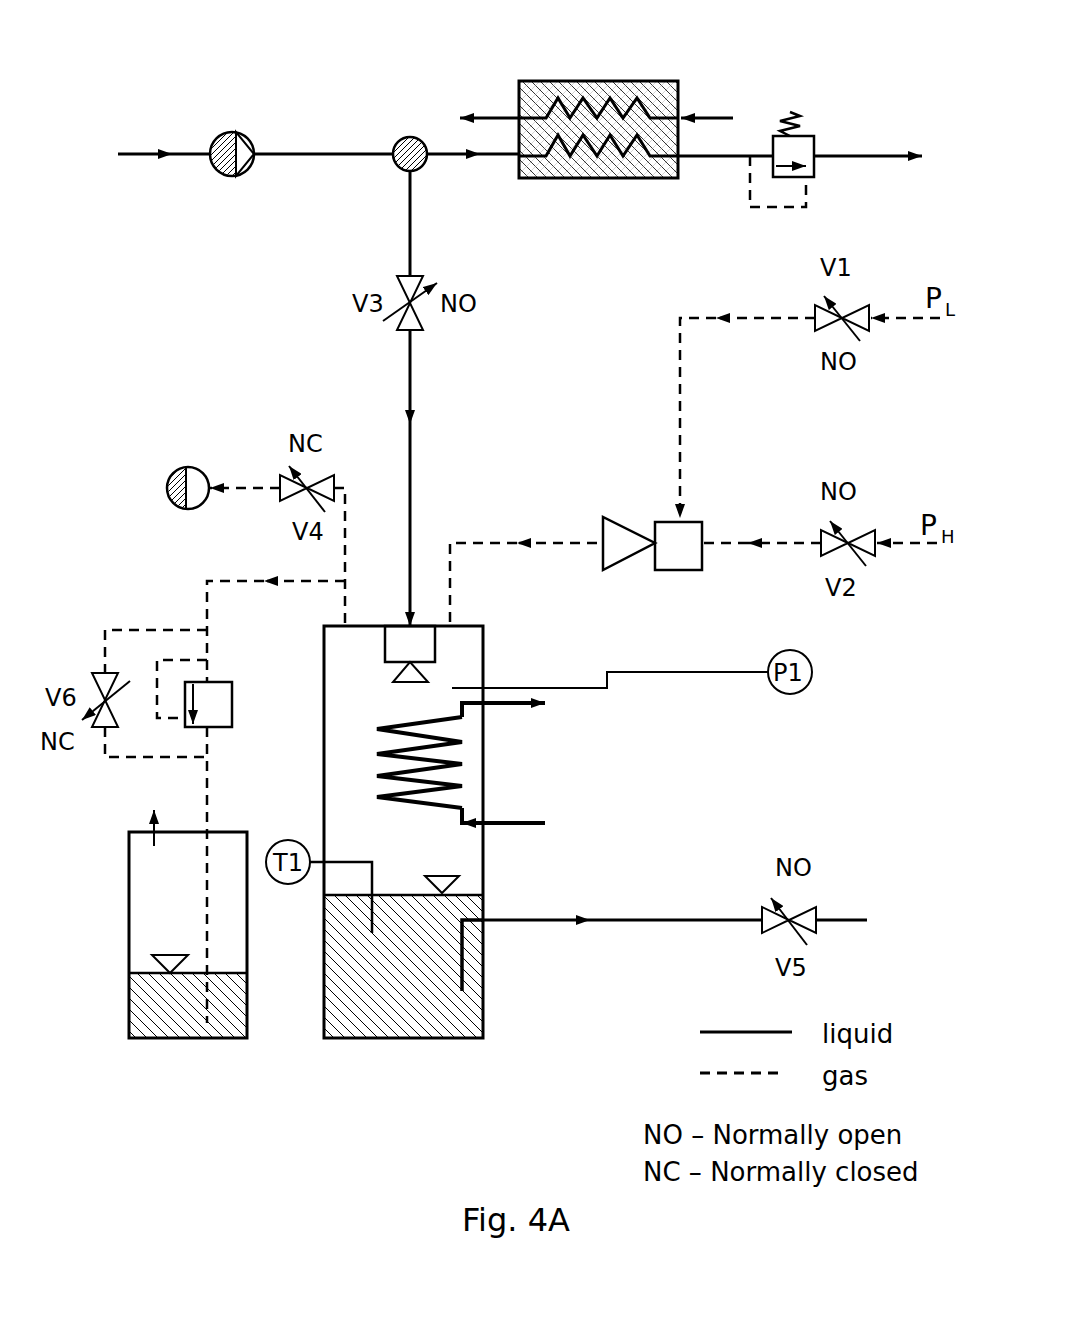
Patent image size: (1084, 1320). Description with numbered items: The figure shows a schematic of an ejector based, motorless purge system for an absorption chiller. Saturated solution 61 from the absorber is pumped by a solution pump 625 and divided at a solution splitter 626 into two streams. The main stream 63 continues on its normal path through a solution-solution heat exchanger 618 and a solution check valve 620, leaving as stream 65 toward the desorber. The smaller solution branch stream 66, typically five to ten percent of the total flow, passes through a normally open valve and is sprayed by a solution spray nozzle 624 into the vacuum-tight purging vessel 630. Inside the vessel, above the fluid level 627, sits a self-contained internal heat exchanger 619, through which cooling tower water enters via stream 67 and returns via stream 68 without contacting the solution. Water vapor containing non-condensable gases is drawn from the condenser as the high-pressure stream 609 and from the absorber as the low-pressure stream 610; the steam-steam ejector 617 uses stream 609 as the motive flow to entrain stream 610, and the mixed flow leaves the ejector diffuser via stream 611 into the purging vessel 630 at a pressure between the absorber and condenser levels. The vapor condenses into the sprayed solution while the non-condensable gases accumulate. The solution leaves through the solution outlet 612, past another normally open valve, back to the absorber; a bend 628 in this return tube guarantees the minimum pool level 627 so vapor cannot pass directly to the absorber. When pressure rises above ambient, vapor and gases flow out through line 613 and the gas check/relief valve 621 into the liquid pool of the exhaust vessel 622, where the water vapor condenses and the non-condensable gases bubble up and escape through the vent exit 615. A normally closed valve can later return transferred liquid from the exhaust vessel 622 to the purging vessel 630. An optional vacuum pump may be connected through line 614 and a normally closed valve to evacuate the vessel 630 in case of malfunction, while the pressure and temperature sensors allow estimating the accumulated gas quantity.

The solution 61 is at (164, 173).
The main stream 63 is at (473, 174).
The main stream 65 is at (868, 175).
The solution branch stream 66 is at (430, 478).
The cooling water inlet stream 67 is at (503, 810).
The cooling water return stream 68 is at (503, 724).
The high-pressure vapor stream 609 is at (819, 525).
The low-pressure vapor stream 610 is at (810, 401).
The ejector outlet stream 611 is at (523, 567).
The solution outlet 612 is at (675, 940).
The vapor exhaust line 613 is at (276, 786).
The vacuum pump line 614 is at (256, 539).
The vent exit 615 is at (124, 818).
The steam-steam ejector 617 is at (705, 578).
The solution-solution heat exchanger 618 is at (599, 81).
The internal heat exchanger 619 is at (547, 762).
The solution check valve 620 is at (813, 136).
The gas check/relief valve 621 is at (232, 703).
The exhaust vessel 622 is at (128, 935).
The solution spray nozzle 624 is at (435, 643).
The solution pump 625 is at (232, 132).
The solution splitter 626 is at (410, 137).
The fluid level 627 is at (437, 875).
The bend 628 is at (467, 922).
The purging vessel 630 is at (486, 1012).